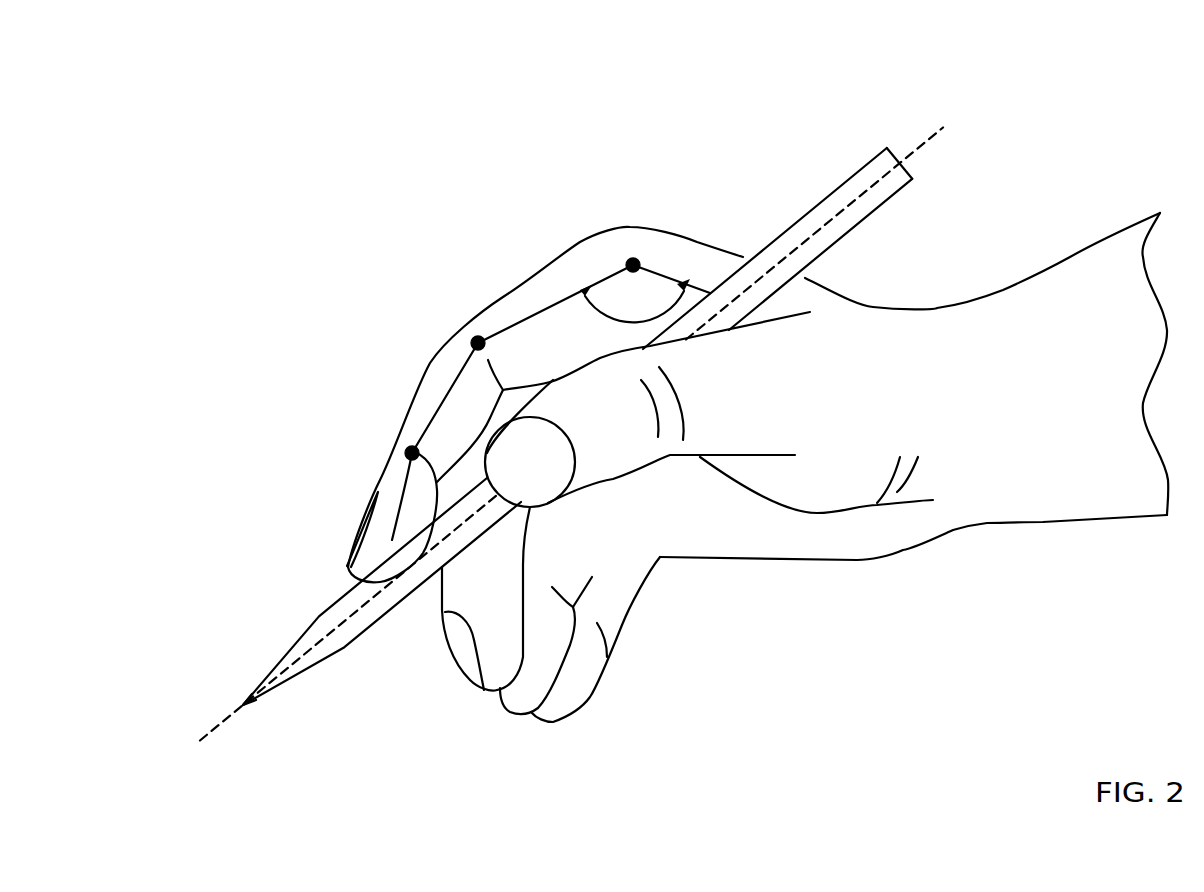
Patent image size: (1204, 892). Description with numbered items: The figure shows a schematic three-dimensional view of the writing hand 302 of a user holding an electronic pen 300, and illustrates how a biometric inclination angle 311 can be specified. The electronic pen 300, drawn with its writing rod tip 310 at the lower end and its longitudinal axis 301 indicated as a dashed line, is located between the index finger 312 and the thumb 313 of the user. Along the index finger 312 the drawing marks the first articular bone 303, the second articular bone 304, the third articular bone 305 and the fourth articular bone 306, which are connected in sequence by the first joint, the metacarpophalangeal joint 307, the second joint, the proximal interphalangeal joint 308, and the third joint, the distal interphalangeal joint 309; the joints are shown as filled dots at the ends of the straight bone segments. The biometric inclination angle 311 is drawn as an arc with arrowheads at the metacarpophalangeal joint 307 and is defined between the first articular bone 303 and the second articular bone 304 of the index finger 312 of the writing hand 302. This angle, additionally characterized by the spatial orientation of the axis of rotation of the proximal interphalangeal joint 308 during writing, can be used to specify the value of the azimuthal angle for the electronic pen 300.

The electronic pen 300 is at (822, 198).
The longitudinal axis of pen 301 is at (927, 140).
The writing hand 302 is at (890, 307).
The first articular bone 303 is at (660, 273).
The second articular bone 304 is at (540, 312).
The third articular bone 305 is at (437, 408).
The fourth articular bone 306 is at (400, 490).
The metacarpophalangeal joint 307 is at (630, 258).
The proximal interphalangeal joint 308 is at (470, 338).
The distal interphalangeal joint 309 is at (404, 450).
The writing rod tip 310 is at (247, 707).
The biometric inclination angle β 311 is at (603, 297).
The index finger 312 is at (498, 297).
The thumb 313 is at (733, 427).